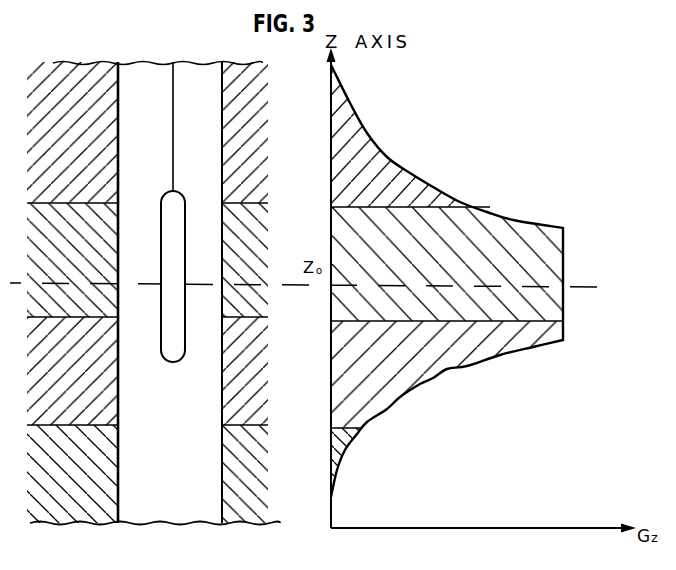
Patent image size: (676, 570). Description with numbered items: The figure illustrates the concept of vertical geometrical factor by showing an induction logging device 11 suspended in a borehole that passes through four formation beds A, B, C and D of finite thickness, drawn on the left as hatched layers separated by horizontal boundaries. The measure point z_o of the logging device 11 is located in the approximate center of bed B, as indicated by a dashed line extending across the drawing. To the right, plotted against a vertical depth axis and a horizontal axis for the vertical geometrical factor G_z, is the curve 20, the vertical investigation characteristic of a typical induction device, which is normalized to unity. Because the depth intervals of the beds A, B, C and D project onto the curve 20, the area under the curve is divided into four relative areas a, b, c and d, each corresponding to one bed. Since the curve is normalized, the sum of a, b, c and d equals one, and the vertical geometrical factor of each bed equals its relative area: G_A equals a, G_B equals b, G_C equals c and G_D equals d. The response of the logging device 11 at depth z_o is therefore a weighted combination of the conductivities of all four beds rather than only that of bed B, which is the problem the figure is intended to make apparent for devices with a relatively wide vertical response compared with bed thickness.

The logging device 11 is at (165, 345).
The curve 20 is at (427, 382).
The bed A is at (147, 132).
The bed B is at (147, 260).
The bed C is at (147, 371).
The bed D is at (147, 474).
The relative area under the curve for bed A a is at (447, 136).
The relative area under the curve for bed B b is at (447, 264).
The relative area under the curve for bed C c is at (447, 374).
The relative area under the curve for bed D d is at (447, 463).